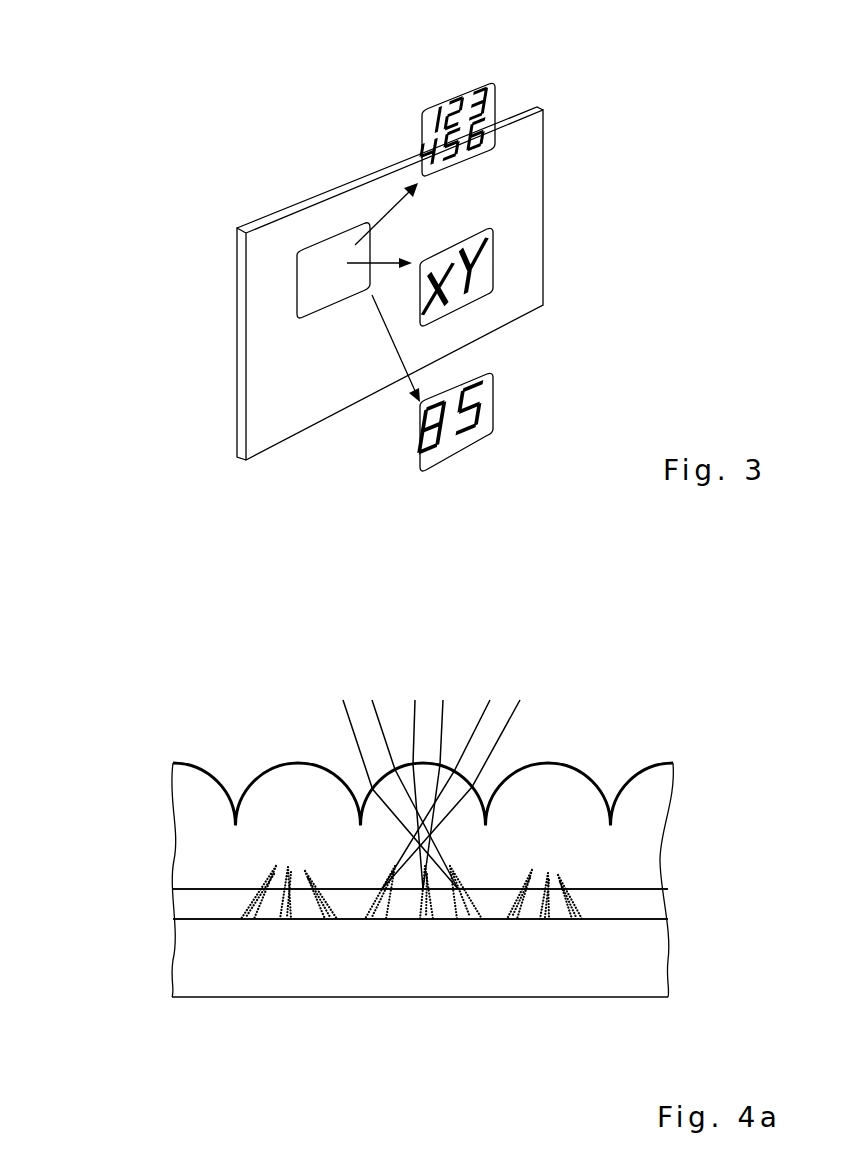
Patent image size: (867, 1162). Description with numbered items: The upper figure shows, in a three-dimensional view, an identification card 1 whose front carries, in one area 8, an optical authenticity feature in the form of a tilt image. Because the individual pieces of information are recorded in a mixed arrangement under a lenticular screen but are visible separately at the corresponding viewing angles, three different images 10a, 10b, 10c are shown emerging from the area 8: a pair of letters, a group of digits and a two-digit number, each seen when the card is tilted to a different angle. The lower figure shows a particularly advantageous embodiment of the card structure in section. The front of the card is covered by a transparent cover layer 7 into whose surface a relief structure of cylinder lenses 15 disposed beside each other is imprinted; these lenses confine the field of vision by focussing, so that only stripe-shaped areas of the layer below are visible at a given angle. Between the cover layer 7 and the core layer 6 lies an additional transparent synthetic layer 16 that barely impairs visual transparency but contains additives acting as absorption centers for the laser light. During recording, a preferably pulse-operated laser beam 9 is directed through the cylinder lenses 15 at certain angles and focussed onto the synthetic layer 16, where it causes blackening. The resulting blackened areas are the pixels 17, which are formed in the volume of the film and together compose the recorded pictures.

In FIG. 3, the identification card 1 is at (440, 280).
In FIG. 3, the area 8 is at (244, 294).
In FIG. 3, the display element showing letters XY 10a is at (545, 257).
In FIG. 3, the display element showing digits 123 456 10b is at (544, 95).
In FIG. 3, the display element showing digits 85 10c is at (543, 390).
In FIG. 4A, the laser beam 9 is at (506, 711).
In FIG. 4A, the cylinder lenses 15 is at (423, 751).
In FIG. 4A, the transparent cover layer 7 is at (376, 880).
In FIG. 4A, the additional transparent synthetic layer 16 is at (367, 906).
In FIG. 4A, the core layer 6 is at (368, 958).
In FIG. 4A, the pixels 17 is at (287, 919).